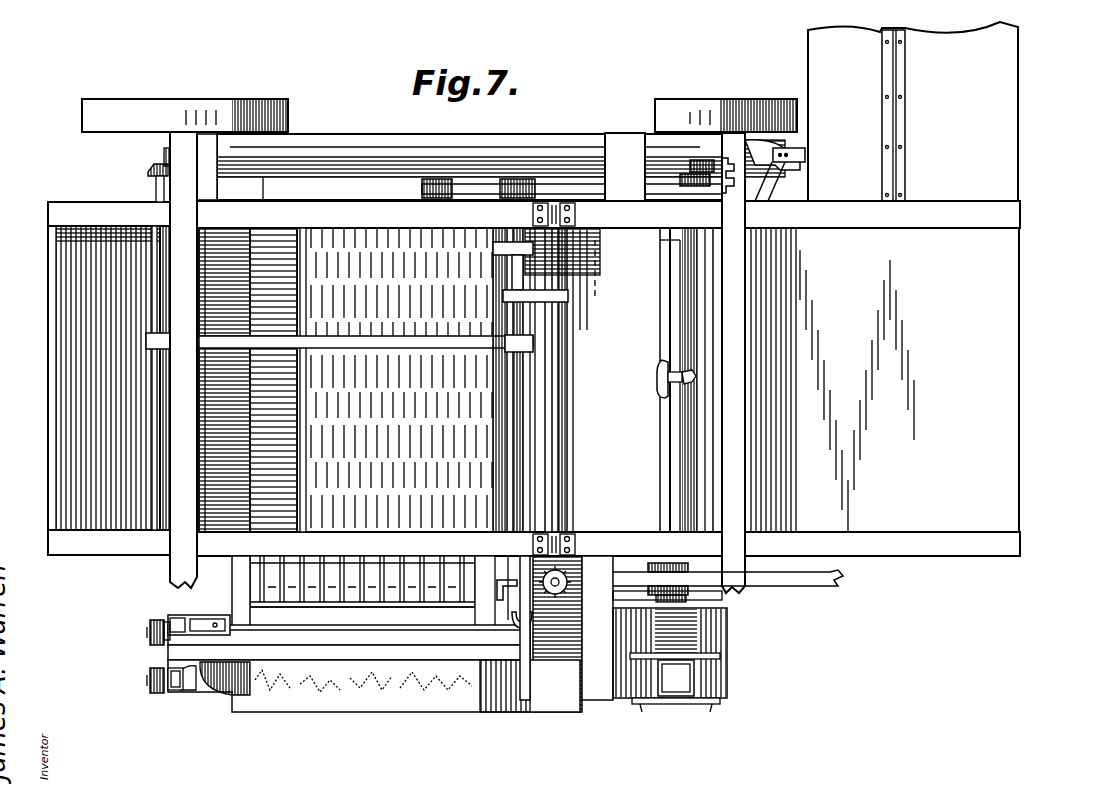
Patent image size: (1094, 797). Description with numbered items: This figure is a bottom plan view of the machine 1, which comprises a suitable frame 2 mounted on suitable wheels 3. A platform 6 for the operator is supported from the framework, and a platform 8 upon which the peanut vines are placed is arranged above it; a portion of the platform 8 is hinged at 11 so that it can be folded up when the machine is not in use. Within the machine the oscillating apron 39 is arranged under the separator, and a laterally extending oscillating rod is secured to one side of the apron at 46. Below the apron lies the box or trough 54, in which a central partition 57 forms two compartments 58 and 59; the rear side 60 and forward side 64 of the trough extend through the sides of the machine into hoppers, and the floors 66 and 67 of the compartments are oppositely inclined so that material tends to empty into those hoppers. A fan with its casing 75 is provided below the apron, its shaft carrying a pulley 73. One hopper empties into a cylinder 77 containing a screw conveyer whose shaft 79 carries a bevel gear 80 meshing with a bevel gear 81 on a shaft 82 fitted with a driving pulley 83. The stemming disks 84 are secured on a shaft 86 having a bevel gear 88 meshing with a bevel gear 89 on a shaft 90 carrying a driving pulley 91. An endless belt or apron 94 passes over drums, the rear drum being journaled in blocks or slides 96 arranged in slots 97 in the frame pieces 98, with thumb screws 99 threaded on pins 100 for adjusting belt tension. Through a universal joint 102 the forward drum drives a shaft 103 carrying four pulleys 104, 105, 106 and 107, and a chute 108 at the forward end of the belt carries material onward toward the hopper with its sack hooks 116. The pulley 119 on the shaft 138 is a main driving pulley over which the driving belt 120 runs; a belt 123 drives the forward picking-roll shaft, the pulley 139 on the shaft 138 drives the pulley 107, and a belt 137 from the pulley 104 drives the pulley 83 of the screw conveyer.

The machine 1 is at (234, 33).
The frame 2 is at (333, 210).
The wheels 3 is at (91, 110).
The platform for the operator 6 is at (1015, 376).
The platform 8 is at (1008, 178).
The hinge 11 is at (905, 136).
The oscillating apron 39 is at (656, 380).
The securing point of oscillating rod 46 is at (665, 405).
The box or trough 54 is at (306, 524).
The central partition 57 is at (300, 428).
The compartment 58 is at (228, 282).
The compartment 59 is at (275, 302).
The rear side of box or trough 60 is at (199, 404).
The forward side of box or trough 64 is at (302, 492).
The bottom or floor of compartment 66 is at (282, 387).
The bottom or floor of compartment 67 is at (230, 422).
The driving pulley 73 is at (440, 180).
The fan casing 75 is at (400, 380).
The cylinder 77 is at (342, 140).
The shaft of conveyer 79 is at (775, 182).
The bevel gear 80 is at (164, 154).
The bevel gear 81 is at (148, 170).
The shaft 82 is at (157, 289).
The driving pulley 83 is at (148, 336).
The stemming disks 84 is at (442, 596).
The shaft 86 is at (330, 640).
The bevel gear 88 is at (510, 598).
The bevel gear 89 is at (522, 612).
The shaft 90 is at (506, 450).
The driving pulley 91 is at (515, 268).
The endless belt or apron 94 is at (408, 690).
The blocks or slides 96 is at (200, 624).
The slots 97 is at (178, 619).
The frame pieces 98 is at (150, 626).
The thumb screws 99 is at (150, 678).
The pins 100 is at (150, 682).
The universal joint 102 is at (523, 698).
The shaft 103 is at (520, 407).
The driving pulley 104 is at (532, 354).
The driving pulley 105 is at (530, 312).
The driving pulley 106 is at (530, 262).
The driving pulley 107 is at (525, 180).
The chute 108 is at (572, 700).
The hooks 116 is at (712, 706).
The pulley 119 is at (683, 562).
The driving belt 120 is at (817, 580).
The belt 123 is at (724, 128).
The belt 137 is at (430, 343).
The shaft 138 is at (658, 413).
The pulley 139 is at (600, 376).